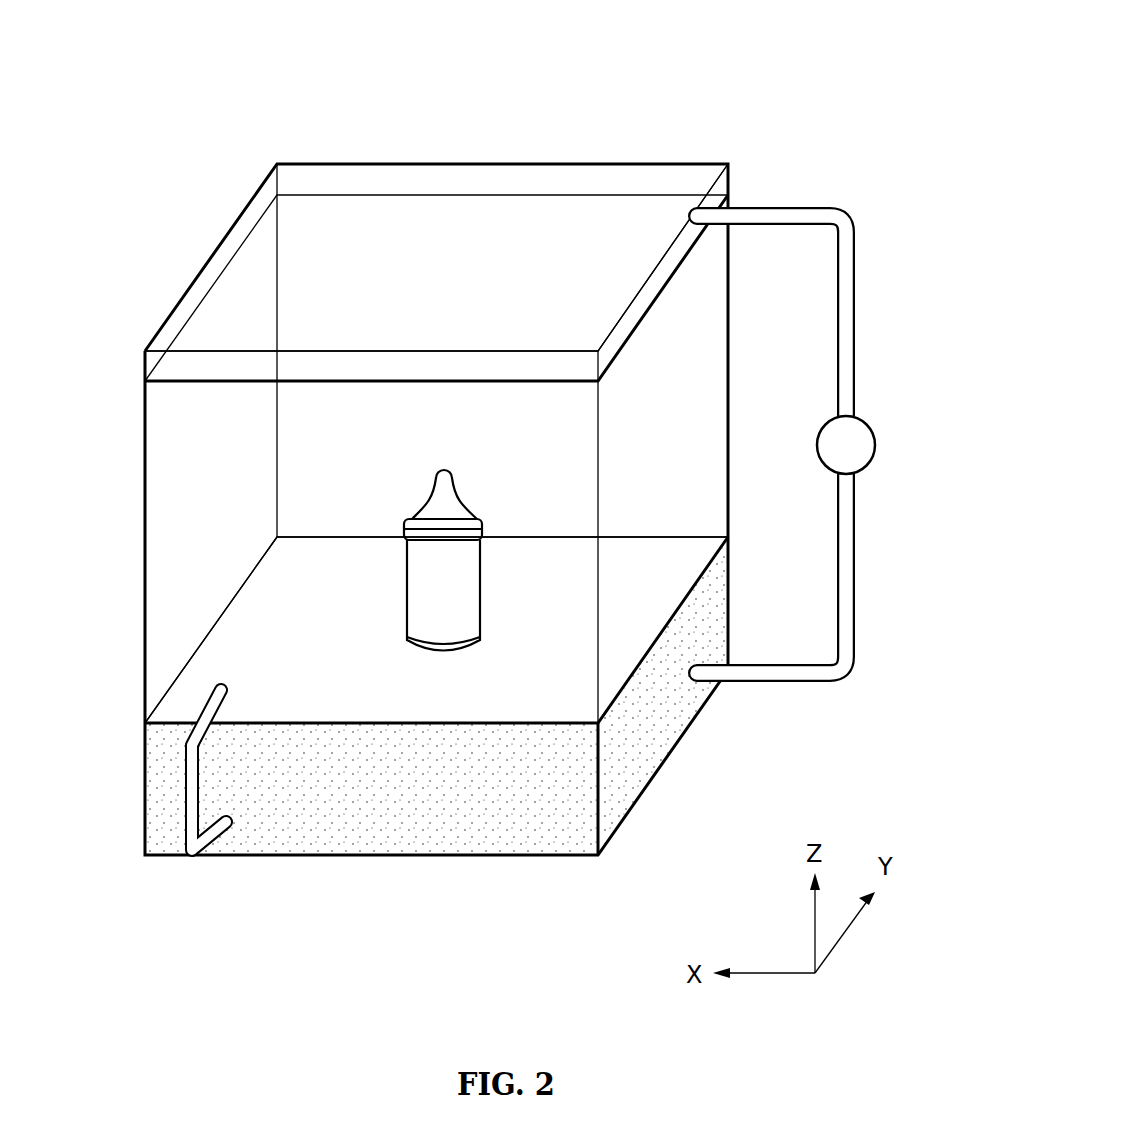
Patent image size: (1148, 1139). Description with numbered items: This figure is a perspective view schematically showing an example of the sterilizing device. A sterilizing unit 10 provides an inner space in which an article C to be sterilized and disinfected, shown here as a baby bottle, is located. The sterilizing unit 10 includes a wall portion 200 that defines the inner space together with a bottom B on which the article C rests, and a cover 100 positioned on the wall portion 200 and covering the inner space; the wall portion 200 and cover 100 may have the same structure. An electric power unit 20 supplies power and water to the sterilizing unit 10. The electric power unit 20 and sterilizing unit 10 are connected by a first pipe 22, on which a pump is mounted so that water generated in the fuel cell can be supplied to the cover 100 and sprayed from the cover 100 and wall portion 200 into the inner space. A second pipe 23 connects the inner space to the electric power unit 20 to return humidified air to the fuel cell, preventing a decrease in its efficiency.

The sterilizing unit 10 is at (795, 121).
The cover 100 is at (488, 170).
The wall portion 200 is at (197, 510).
The electric power unit 20 is at (350, 845).
The first pipe 22 is at (848, 292).
The second pipe 23 is at (185, 783).
The bottom B is at (630, 628).
The article C is at (340, 567).